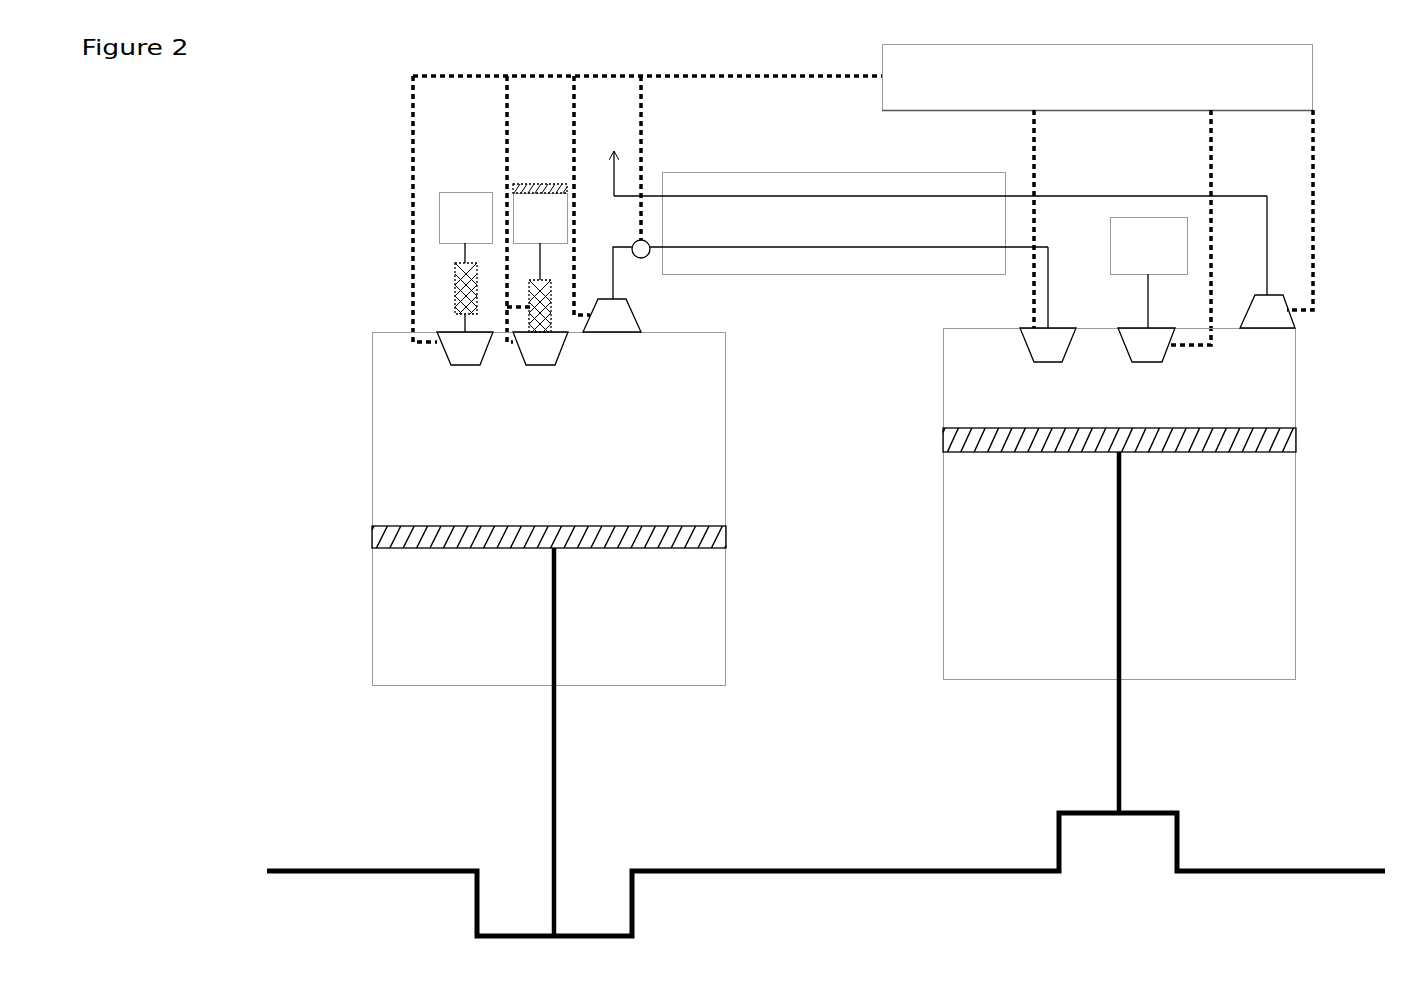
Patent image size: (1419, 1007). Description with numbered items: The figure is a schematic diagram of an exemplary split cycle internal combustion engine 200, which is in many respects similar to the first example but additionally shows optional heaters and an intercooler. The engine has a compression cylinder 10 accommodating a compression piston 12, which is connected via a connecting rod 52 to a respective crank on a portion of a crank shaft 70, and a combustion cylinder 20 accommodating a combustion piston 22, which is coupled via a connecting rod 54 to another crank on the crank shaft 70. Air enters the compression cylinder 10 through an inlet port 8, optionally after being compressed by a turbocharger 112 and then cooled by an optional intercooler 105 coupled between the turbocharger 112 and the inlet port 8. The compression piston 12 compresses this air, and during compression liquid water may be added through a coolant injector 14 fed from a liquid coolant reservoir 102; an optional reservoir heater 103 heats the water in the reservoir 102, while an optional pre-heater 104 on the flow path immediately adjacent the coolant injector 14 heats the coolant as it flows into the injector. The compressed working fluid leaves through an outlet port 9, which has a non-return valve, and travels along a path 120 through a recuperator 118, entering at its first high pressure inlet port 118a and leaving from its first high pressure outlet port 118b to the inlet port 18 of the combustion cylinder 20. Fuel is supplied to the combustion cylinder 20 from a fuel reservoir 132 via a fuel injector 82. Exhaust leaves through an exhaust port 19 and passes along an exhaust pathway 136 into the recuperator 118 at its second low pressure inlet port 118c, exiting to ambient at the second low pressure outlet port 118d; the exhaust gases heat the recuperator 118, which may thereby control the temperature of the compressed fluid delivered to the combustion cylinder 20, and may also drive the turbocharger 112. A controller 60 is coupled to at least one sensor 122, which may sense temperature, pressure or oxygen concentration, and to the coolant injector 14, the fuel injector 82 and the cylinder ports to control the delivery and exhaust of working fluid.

The engine 200 is at (170, 183).
The controller 60 is at (863, 195).
The compression cylinder 10 is at (549, 509).
The compression piston 12 is at (575, 538).
The connecting rod 52 is at (575, 743).
The inlet port 8 is at (465, 348).
The coolant injector 14 is at (540, 348).
The outlet port 9 is at (612, 315).
The turbocharger 112 is at (466, 263).
The intercooler 105 is at (443, 293).
The liquid coolant reservoir 102 is at (541, 237).
The reservoir heater 103 is at (540, 184).
The pre-heater 104 is at (552, 313).
The recuperator 118 is at (834, 224).
The first (high pressure) inlet port 118a is at (664, 260).
The first (high pressure) outlet port 118b is at (849, 234).
The second (low pressure) inlet port 118c is at (1107, 245).
The second (low pressure) outlet port 118d is at (940, 185).
The sensor 122 is at (650, 257).
The path 120 is at (1050, 250).
The exhaust pathway 136 is at (1274, 226).
The combustion cylinder 20 is at (1120, 504).
The combustion piston 22 is at (1140, 440).
The connecting rod 54 is at (1147, 632).
The inlet port 18 is at (1048, 345).
The fuel injector 82 is at (1146, 345).
The exhaust port 19 is at (1267, 311).
The fuel reservoir 132 is at (1149, 273).
The crank shaft 70 is at (826, 874).